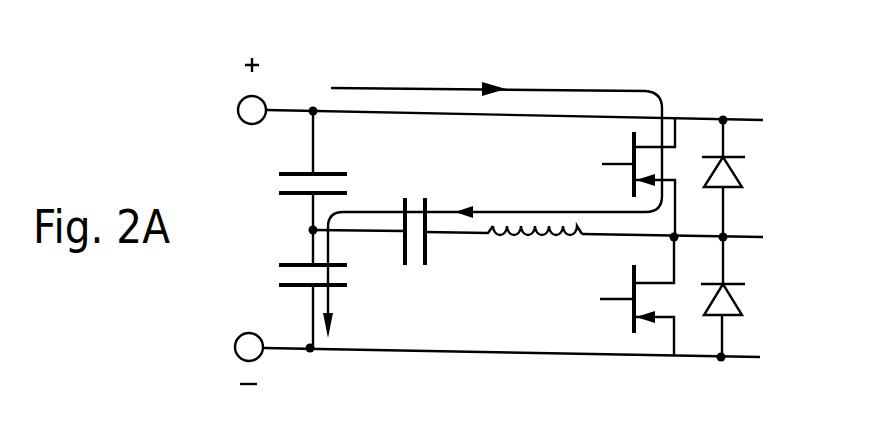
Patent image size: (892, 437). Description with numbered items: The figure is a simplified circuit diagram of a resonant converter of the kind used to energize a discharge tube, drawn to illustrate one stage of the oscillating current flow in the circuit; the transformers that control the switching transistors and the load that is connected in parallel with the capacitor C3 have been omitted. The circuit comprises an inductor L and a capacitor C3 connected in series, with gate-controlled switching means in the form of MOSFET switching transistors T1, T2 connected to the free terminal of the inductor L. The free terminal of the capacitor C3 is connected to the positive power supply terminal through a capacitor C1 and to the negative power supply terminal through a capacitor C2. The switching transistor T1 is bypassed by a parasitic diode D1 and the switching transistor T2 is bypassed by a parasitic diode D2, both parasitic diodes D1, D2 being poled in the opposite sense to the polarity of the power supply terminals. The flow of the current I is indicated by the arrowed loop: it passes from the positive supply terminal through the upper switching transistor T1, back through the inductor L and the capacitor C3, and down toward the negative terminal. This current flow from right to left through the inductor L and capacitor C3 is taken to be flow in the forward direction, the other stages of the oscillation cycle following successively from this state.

The capacitor C1 is at (289, 170).
The capacitor C2 is at (289, 289).
The capacitor C3 is at (433, 245).
The inductor L is at (537, 253).
The switching transistor T1 is at (627, 178).
The switching transistor T2 is at (625, 296).
The parasitic diode D1 is at (751, 178).
The parasitic diode D2 is at (751, 297).
The current I is at (433, 88).